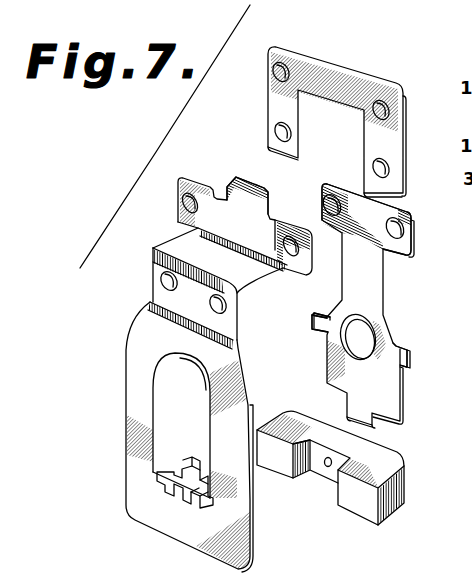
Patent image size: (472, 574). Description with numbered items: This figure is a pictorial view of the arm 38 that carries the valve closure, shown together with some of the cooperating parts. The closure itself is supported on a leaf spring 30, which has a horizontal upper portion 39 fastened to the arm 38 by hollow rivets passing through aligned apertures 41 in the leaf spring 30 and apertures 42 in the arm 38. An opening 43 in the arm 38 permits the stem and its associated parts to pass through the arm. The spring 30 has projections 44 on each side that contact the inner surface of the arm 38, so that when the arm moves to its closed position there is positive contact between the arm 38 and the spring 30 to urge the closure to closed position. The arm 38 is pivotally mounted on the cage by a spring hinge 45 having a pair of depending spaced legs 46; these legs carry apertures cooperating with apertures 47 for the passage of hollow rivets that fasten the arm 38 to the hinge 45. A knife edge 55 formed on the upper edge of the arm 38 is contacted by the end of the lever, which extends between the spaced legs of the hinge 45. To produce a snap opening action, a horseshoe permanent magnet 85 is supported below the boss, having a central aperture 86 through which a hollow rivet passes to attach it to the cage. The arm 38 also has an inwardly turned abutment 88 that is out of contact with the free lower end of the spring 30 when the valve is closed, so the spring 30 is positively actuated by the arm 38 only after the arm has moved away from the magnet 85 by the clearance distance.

The leaf spring 30 is at (373, 281).
The arm 38 is at (128, 352).
The horizontal upper portion 39 is at (408, 227).
The apertures 41 is at (326, 203).
The apertures 42 is at (163, 280).
The opening 43 is at (205, 395).
The projections 44 is at (312, 324).
The spring hinge 45 is at (348, 75).
The depending spaced legs 46 is at (271, 104).
The apertures 47 is at (185, 202).
The knife edge 55 is at (248, 181).
The horseshoe permanent magnet 85 is at (390, 512).
The central aperture 86 is at (324, 467).
The inwardly turned abutment 88 is at (187, 462).